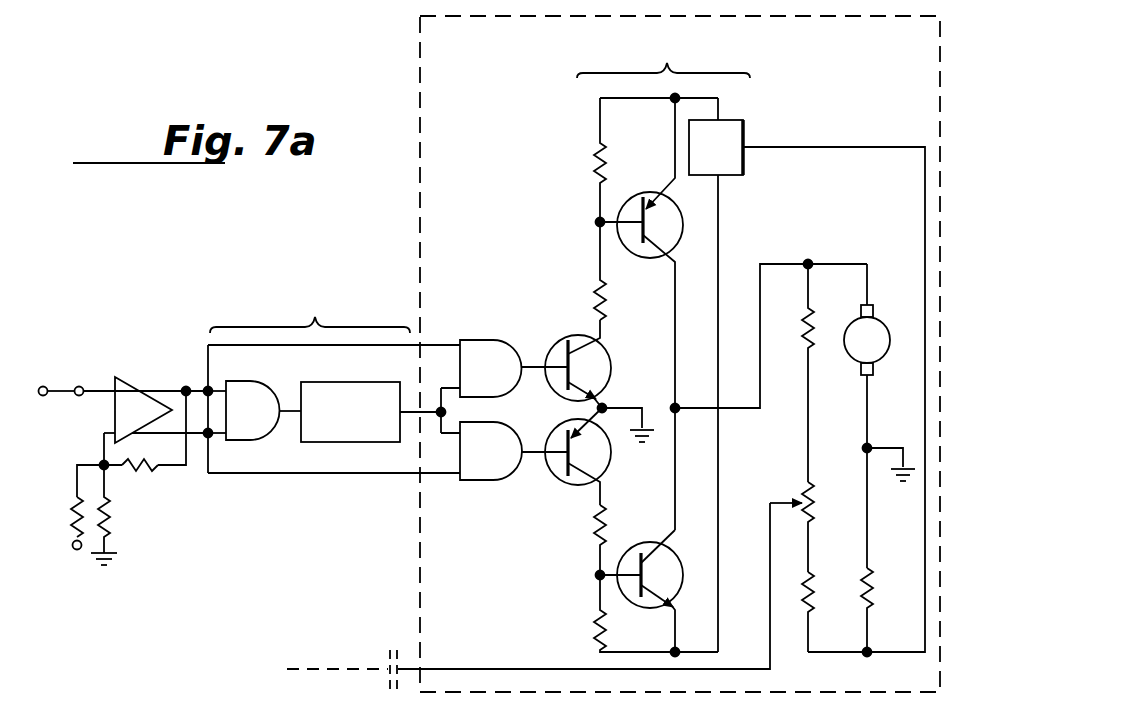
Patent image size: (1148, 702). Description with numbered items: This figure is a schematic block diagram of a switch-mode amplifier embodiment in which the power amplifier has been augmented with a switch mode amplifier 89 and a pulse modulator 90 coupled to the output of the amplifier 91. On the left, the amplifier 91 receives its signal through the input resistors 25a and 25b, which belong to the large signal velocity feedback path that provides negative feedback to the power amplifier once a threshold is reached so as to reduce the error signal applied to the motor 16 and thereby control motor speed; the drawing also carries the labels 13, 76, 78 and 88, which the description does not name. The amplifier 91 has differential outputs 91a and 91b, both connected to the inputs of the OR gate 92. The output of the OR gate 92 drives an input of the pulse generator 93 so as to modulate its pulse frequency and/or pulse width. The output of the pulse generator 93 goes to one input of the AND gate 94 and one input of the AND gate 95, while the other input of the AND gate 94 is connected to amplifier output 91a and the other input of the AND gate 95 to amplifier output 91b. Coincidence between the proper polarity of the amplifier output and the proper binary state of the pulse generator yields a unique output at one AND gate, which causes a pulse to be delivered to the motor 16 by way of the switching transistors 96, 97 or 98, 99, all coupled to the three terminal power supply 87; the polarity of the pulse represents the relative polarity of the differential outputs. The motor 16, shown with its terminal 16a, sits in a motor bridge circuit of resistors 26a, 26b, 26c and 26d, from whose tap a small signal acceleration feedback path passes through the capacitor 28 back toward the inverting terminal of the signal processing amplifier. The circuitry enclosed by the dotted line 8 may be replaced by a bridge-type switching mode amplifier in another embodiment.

The dotted line block 8 is at (418, 75).
The input terminals 13 is at (81, 387).
The motor 16 is at (852, 360).
The motor terminal 16a is at (872, 282).
The input resistor 25a is at (75, 512).
The input resistor 25b is at (111, 515).
The resistor 26a is at (805, 332).
The resistor 26b is at (803, 502).
The resistor 26c is at (805, 600).
The resistor 26d is at (870, 586).
The capacitor 28 is at (387, 657).
The ground connection 76 is at (869, 446).
The feedback line 78 is at (849, 545).
The three terminal power supply 87 is at (745, 160).
The supply line 88 is at (825, 145).
The switch mode amplifier 89 is at (663, 57).
The pulse modulator 90 is at (310, 312).
The amplifier 91 is at (120, 409).
The differential output 91a is at (181, 380).
The differential output 91b is at (196, 444).
The OR gate 92 is at (255, 388).
The pulse generator 93 is at (352, 388).
The AND gate 94 is at (479, 340).
The AND gate 95 is at (490, 481).
The switching transistor 96 is at (558, 347).
The switching transistor 97 is at (627, 207).
The switching transistor 98 is at (575, 484).
The switching transistor 99 is at (667, 568).